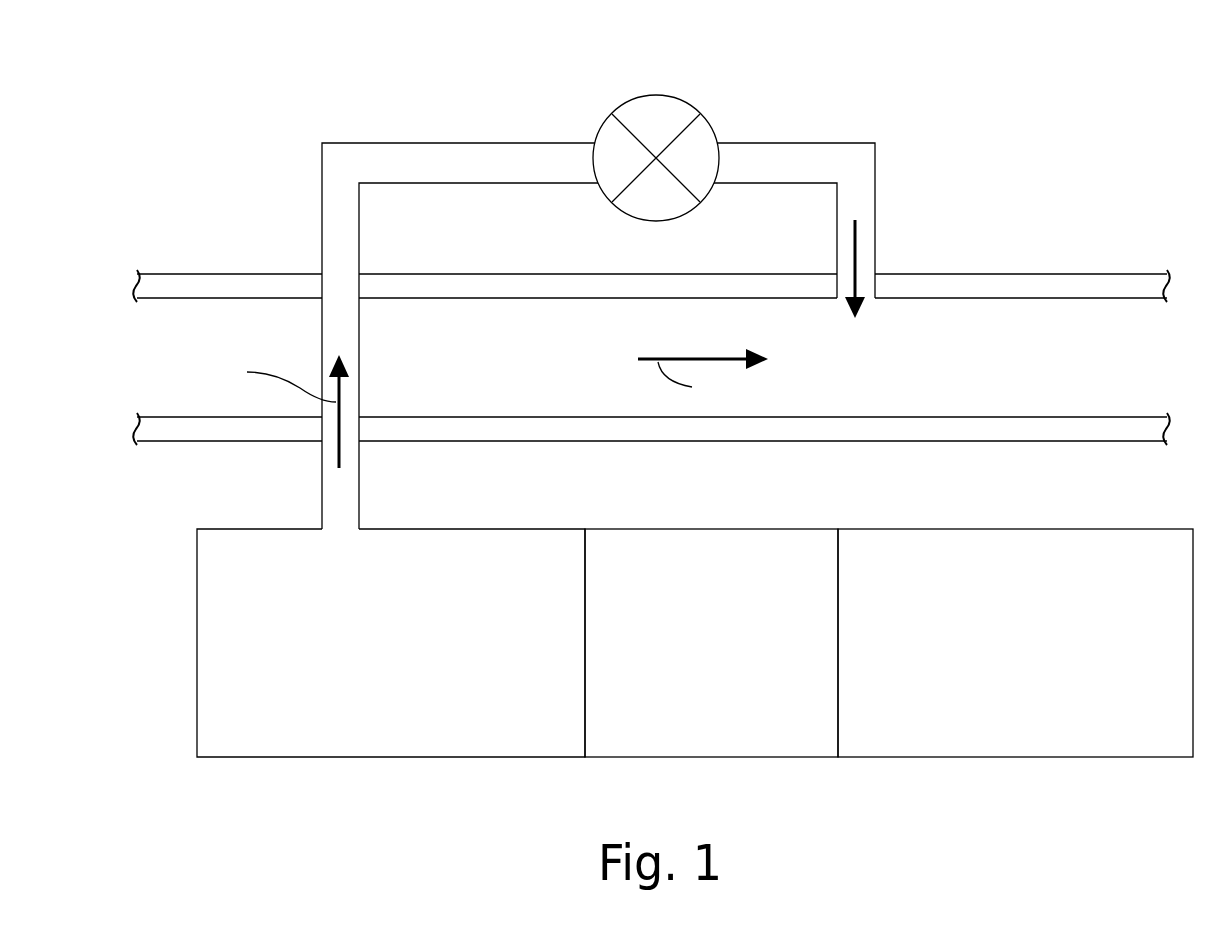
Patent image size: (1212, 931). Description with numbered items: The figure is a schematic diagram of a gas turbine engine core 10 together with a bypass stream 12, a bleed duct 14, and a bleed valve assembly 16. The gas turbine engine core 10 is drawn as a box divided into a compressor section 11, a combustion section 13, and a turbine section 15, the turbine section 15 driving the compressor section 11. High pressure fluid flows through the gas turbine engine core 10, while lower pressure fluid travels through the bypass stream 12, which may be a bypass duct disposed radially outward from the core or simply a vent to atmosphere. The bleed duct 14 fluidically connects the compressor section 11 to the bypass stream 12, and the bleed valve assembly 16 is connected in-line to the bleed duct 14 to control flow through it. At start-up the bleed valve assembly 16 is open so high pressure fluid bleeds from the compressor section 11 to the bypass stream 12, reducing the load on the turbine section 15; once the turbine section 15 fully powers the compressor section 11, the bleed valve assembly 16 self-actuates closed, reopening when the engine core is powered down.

The gas turbine engine core 10 is at (160, 612).
The compressor section 11 is at (356, 716).
The bypass stream 12 is at (455, 352).
The combustion section 13 is at (675, 716).
The bleed duct 14 is at (389, 143).
The turbine section 15 is at (988, 716).
The bleed valve assembly 16 is at (632, 93).